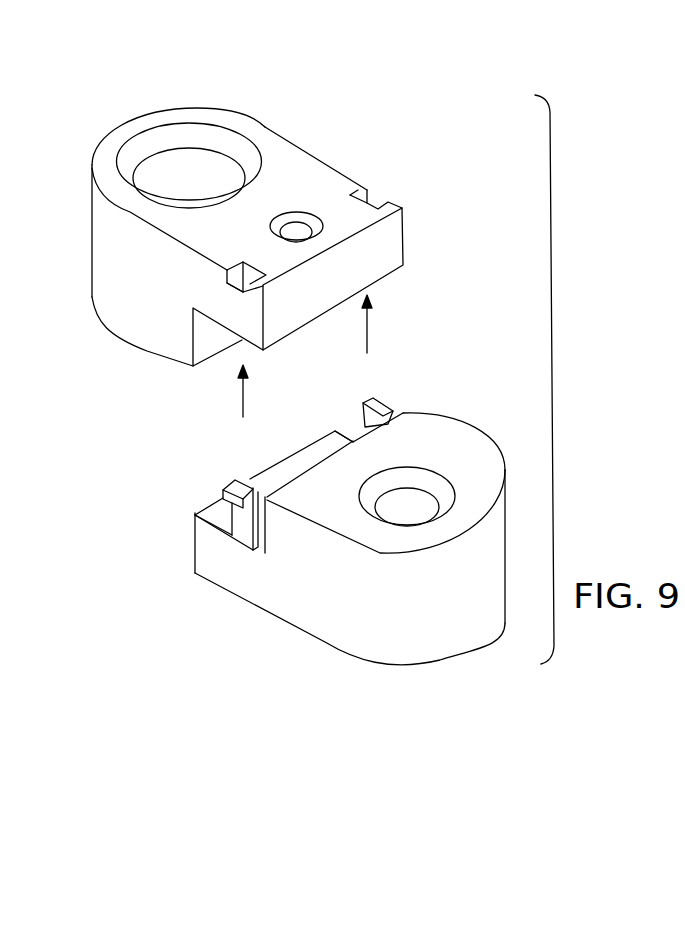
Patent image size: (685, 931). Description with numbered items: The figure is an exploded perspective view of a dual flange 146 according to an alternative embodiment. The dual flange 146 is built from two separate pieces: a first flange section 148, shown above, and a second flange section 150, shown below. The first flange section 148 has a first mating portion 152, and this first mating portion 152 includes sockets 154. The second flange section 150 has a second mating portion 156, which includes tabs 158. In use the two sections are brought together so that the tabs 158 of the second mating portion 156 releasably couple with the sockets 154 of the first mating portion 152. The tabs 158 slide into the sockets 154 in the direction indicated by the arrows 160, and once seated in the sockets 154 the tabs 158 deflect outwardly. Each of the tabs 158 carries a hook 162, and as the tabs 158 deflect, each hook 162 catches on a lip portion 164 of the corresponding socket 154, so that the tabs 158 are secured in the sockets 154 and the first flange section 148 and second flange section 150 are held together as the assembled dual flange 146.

The dual flange 146 is at (499, 174).
The first flange section 148 is at (262, 130).
The second flange section 150 is at (503, 473).
The first mating portion 152 is at (402, 244).
The sockets 154 is at (230, 262).
The second mating portion 156 is at (300, 456).
The tabs 158 is at (362, 426).
The arrows 160 is at (368, 346).
The hook 162 is at (386, 414).
The lip portion 164 is at (232, 285).